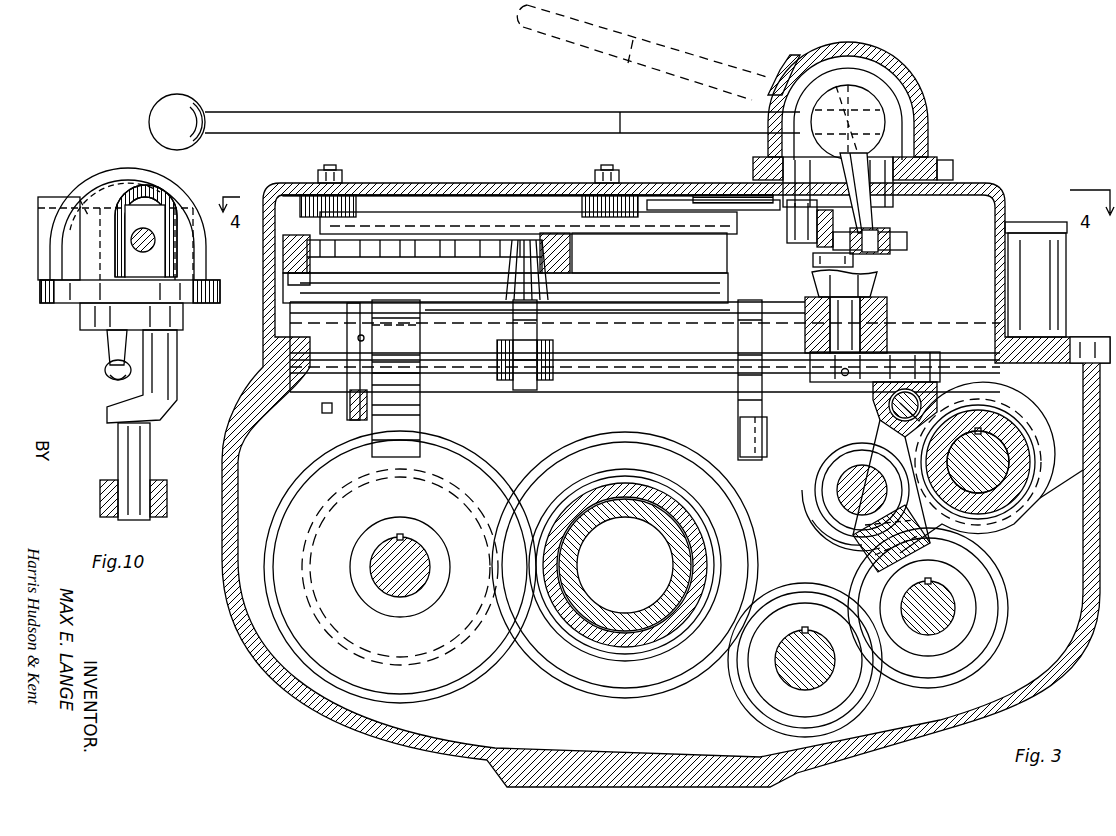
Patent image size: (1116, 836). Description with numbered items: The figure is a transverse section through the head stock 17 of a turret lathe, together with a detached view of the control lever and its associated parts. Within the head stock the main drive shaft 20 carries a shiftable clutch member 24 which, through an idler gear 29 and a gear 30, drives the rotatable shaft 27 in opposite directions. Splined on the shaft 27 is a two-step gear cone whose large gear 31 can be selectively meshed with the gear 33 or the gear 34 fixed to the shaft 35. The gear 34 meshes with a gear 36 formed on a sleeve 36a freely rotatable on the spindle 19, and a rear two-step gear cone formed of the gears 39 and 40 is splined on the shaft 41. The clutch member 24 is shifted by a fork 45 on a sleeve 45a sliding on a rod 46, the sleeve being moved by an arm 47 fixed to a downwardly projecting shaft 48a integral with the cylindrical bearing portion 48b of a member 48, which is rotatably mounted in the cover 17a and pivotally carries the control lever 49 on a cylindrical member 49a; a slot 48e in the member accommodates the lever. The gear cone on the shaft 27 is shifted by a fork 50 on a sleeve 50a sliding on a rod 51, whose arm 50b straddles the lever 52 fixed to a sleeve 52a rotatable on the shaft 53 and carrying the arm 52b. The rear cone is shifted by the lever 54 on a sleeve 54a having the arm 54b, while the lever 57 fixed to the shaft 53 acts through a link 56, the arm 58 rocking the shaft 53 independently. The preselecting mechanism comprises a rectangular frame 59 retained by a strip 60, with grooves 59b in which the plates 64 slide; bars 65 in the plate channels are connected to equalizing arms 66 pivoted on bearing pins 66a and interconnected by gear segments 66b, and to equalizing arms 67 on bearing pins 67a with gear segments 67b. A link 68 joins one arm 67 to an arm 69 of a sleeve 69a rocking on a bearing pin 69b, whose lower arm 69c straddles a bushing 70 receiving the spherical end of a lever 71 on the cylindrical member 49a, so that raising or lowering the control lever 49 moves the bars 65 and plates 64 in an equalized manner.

In FIG. 3, the head stock 17 is at (1072, 662).
In FIG. 3, the cover 17a is at (985, 185).
In FIG. 3, the spindle 19 is at (580, 560).
In FIG. 3, the main drive shaft 20 is at (1008, 475).
In FIG. 3, the shiftable clutch member 24 is at (1015, 502).
In FIG. 3, the rotatable shaft 27 is at (960, 608).
In FIG. 3, the idler gear 29 is at (855, 540).
In FIG. 3, the gear 30 is at (1000, 578).
In FIG. 3, the gear 31 is at (985, 562).
In FIG. 3, the gear 33 is at (855, 688).
In FIG. 3, the gear 34 is at (765, 695).
In FIG. 3, the shaft 35 is at (740, 680).
In FIG. 3, the gear 36 is at (640, 437).
In FIG. 3, the sleeve 36a is at (658, 490).
In FIG. 3, the gear 39 is at (420, 645).
In FIG. 3, the gear 40 is at (478, 670).
In FIG. 3, the shaft 41 is at (413, 555).
In FIG. 3, the fork 45 is at (964, 400).
In FIG. 3, the sleeve 45a is at (950, 395).
In FIG. 3, the rod 46 is at (892, 403).
In FIG. 3, the arm 47 is at (905, 370).
In FIG. 10, the arm 47 is at (166, 500).
In FIG. 3, the member 48 is at (924, 112).
In FIG. 10, the member 48 is at (100, 182).
In FIG. 3, the downwardly projecting shaft 48a is at (850, 322).
In FIG. 10, the downwardly projecting shaft 48a is at (118, 456).
In FIG. 3, the cylindrical bearing portion 48b is at (940, 170).
In FIG. 10, the cylindrical bearing portion 48b is at (82, 318).
In FIG. 3, the bracket slot 48e is at (782, 68).
In FIG. 10, the bracket slot 48e is at (150, 192).
In FIG. 3, the control lever 49 is at (447, 113).
In FIG. 10, the control lever 49 is at (155, 247).
In FIG. 3, the cylindrical member 49a is at (872, 95).
In FIG. 10, the cylindrical member 49a is at (82, 205).
In FIG. 3, the fork 50 is at (868, 550).
In FIG. 3, the sleeve 50a is at (848, 508).
In FIG. 3, the arm 50b is at (815, 445).
In FIG. 3, the rod 51 is at (840, 490).
In FIG. 3, the lever 52 is at (750, 404).
In FIG. 3, the sleeve 52a is at (674, 318).
In FIG. 3, the arm 52b is at (547, 385).
In FIG. 3, the shaft 53 is at (602, 320).
In FIG. 3, the lever 54 is at (412, 398).
In FIG. 3, the sleeve 54a is at (445, 315).
In FIG. 3, the arm 54b is at (500, 385).
In FIG. 3, the link 56 is at (358, 412).
In FIG. 3, the lever 57 is at (340, 378).
In FIG. 3, the arm 58 is at (521, 390).
In FIG. 3, the rectangular frame 59 is at (283, 256).
In FIG. 3, the grooves 59b is at (292, 270).
In FIG. 3, the retaining strip 60 is at (726, 293).
In FIG. 3, the plate 64 is at (370, 255).
In FIG. 3, the bars 65 is at (566, 212).
In FIG. 3, the equalizing arms 66 is at (382, 195).
In FIG. 3, the shouldered bearing pins 66a is at (330, 170).
In FIG. 3, the gear segments 66b is at (318, 198).
In FIG. 3, the equalizing arms 67 is at (652, 200).
In FIG. 3, the shouldered bearing pins 67a is at (610, 170).
In FIG. 3, the gear segments 67b is at (603, 217).
In FIG. 3, the link 68 is at (722, 195).
In FIG. 3, the arm 69 is at (788, 222).
In FIG. 3, the sleeve 69a is at (817, 238).
In FIG. 3, the shouldered bearing pin 69b is at (862, 270).
In FIG. 3, the arm 69c is at (818, 258).
In FIG. 3, the double flanged bushing 70 is at (888, 235).
In FIG. 3, the lever 71 is at (878, 158).
In FIG. 10, the lever 71 is at (112, 345).